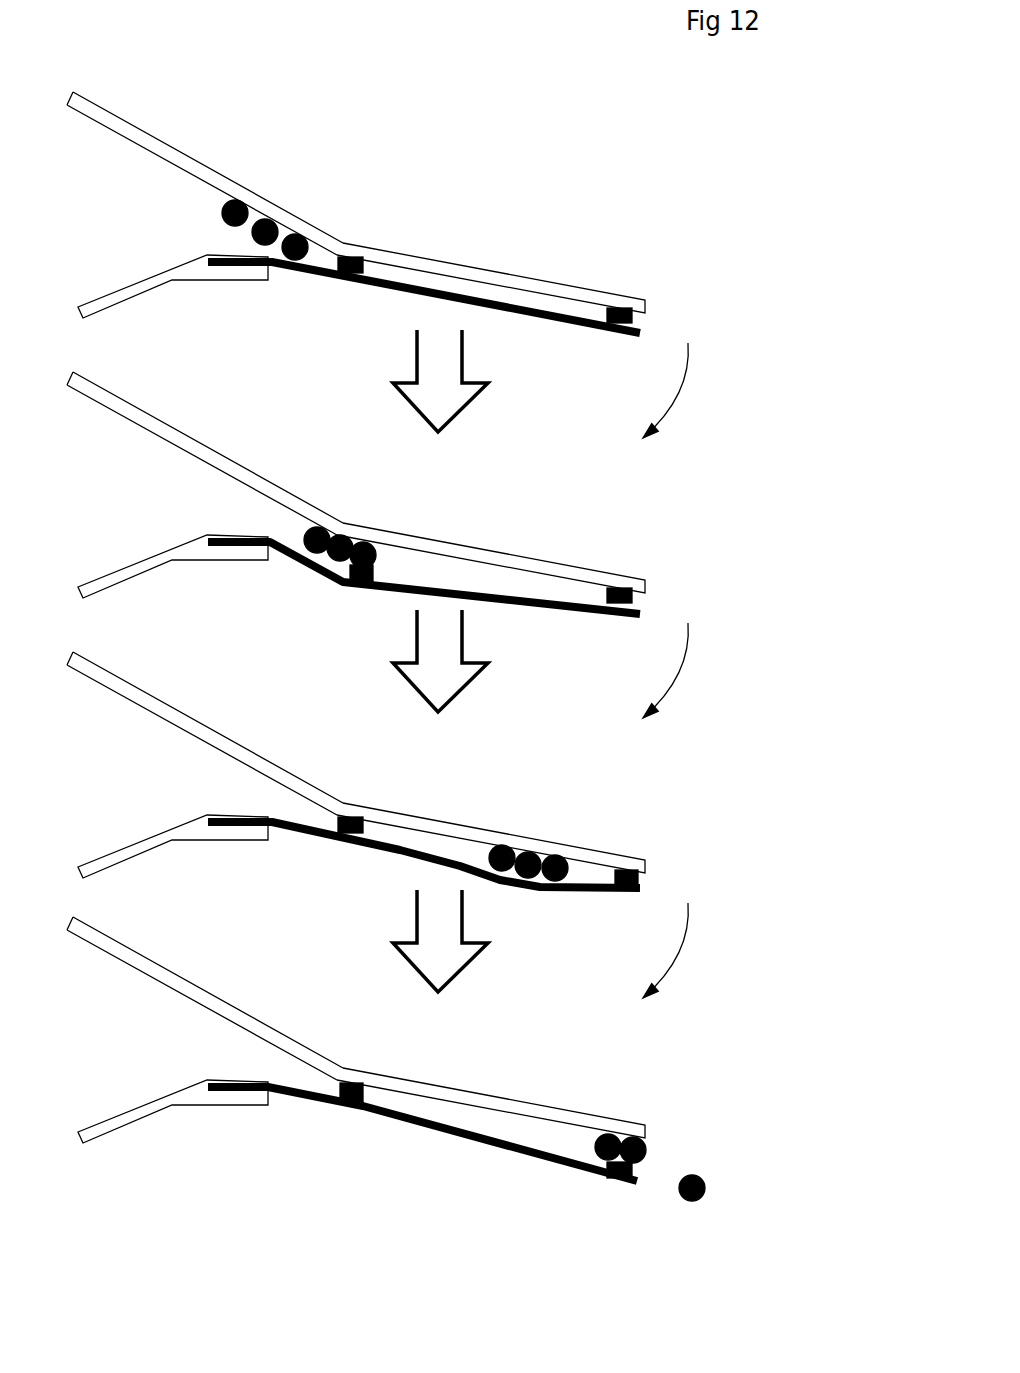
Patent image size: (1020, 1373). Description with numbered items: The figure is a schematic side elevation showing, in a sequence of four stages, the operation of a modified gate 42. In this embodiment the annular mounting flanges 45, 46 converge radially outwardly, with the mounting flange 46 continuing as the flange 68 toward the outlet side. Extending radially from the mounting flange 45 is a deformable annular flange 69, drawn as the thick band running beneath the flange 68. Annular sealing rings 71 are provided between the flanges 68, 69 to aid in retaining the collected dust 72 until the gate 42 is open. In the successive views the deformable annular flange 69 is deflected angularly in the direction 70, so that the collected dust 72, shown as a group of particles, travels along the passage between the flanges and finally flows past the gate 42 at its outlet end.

The gate 42 is at (556, 161).
The annular mounting flange 45 is at (148, 285).
The annular mounting flange 46 is at (273, 212).
The flange 68 is at (493, 278).
The deformable annular flange 69 is at (528, 315).
The direction 70 is at (677, 390).
The annular sealing ring 71 is at (353, 258).
The collected dust 72 is at (282, 250).